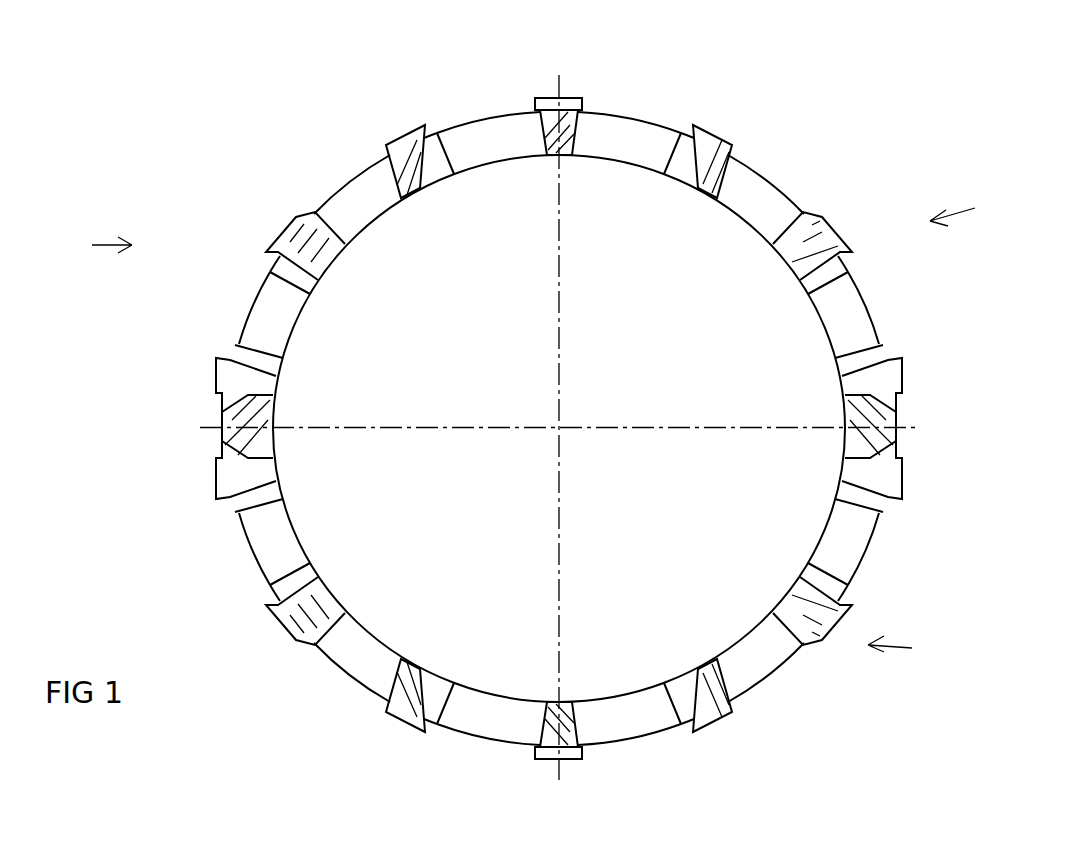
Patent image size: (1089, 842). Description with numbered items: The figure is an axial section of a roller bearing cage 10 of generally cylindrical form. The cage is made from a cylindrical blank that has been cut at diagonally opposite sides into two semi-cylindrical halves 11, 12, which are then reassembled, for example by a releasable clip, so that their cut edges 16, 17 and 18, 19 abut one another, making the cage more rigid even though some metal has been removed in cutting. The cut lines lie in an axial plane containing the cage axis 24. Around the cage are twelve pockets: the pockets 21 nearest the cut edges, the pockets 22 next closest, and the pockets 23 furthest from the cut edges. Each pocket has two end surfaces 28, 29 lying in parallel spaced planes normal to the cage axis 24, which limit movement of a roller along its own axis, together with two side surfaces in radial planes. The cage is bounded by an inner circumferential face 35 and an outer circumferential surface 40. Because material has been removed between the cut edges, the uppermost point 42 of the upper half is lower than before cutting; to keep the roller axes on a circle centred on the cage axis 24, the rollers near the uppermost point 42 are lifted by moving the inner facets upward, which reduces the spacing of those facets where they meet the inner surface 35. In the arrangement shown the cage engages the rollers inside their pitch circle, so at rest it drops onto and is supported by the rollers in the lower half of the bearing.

The roller bearing cage 10 is at (87, 244).
The semi-cylindrical half 11 is at (975, 209).
The semi-cylindrical half 12 is at (921, 647).
The cut edge 16 is at (242, 420).
The cut edge 17 is at (250, 437).
The cut edge 18 is at (898, 395).
The cut edge 19 is at (898, 443).
The pocket 21 is at (846, 297).
The pocket 22 is at (790, 200).
The pocket 23 is at (484, 128).
The cage axis 24 is at (565, 424).
The end surface 28 is at (908, 262).
The end surface 29 is at (662, 428).
The inner circumferential face 35 is at (627, 165).
The outer circumferential surface 40 is at (742, 150).
The uppermost point 42 is at (580, 100).